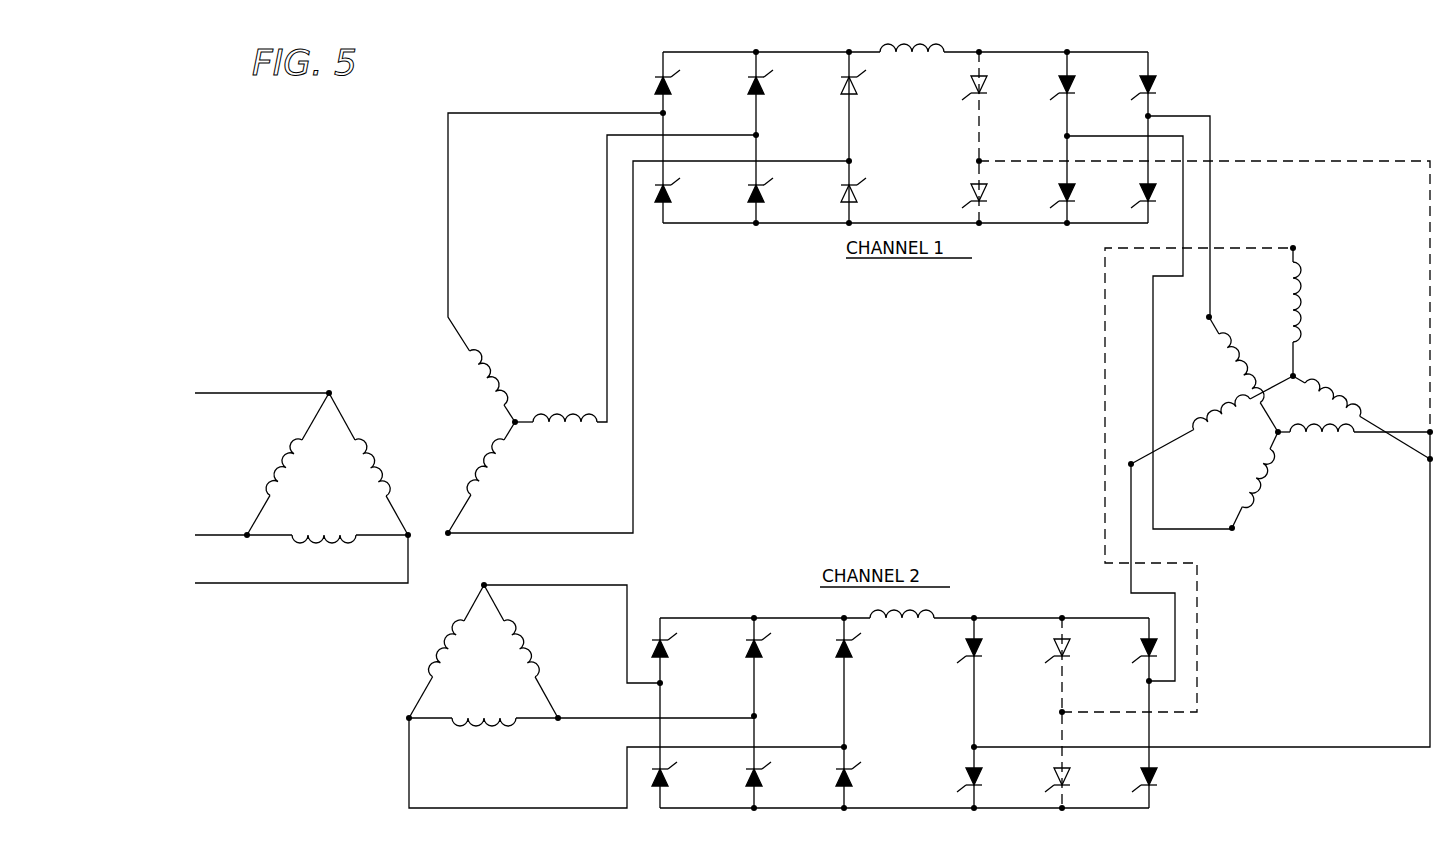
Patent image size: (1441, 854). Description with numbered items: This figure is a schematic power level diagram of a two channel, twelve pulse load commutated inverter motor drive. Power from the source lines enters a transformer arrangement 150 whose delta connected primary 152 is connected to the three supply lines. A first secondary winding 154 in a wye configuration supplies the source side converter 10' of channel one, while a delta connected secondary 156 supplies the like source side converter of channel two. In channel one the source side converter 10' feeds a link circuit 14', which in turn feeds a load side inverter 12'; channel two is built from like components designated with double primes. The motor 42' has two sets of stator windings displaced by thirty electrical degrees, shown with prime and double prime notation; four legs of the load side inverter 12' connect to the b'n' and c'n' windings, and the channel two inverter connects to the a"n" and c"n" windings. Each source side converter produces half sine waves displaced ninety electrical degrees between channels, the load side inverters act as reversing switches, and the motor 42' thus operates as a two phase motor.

The source side converter 10' is at (767, 125).
The link circuit 14' is at (872, 38).
The load side inverter 12' is at (1002, 125).
The motor 42' is at (1273, 396).
The transformer arrangement 150 is at (427, 320).
The delta connected primary 152 is at (338, 390).
The first secondary winding 154 is at (503, 419).
The delta connected secondary 156 is at (454, 606).